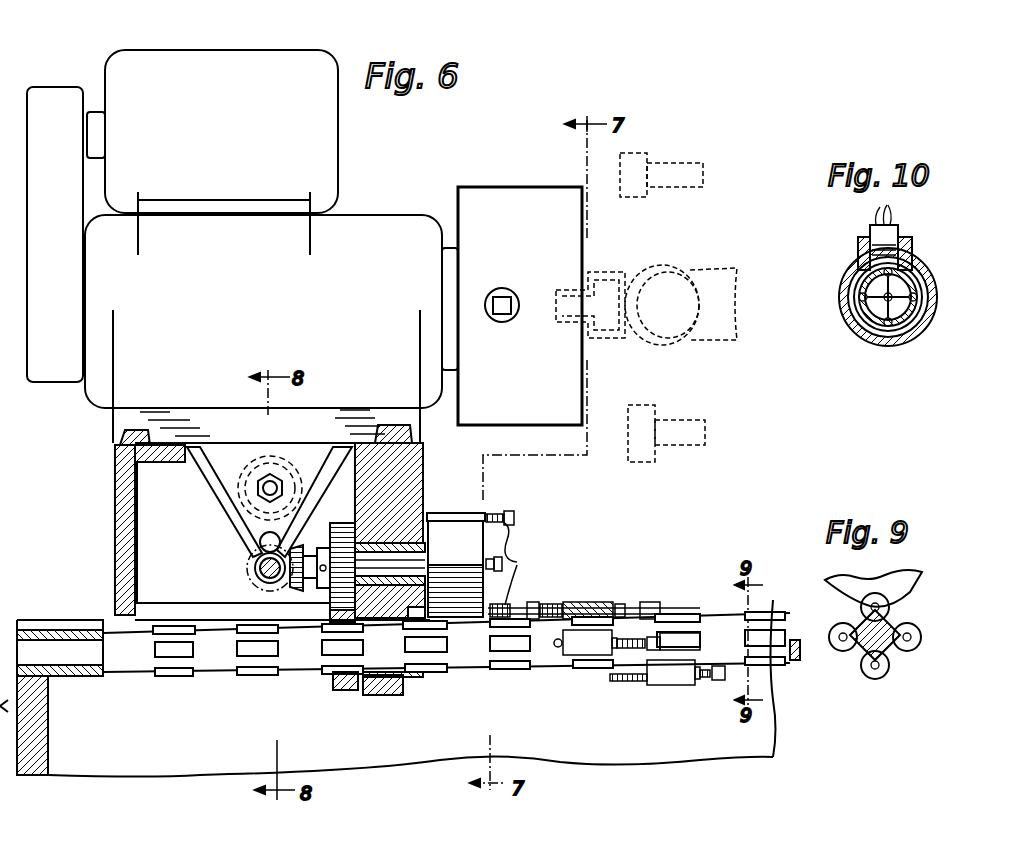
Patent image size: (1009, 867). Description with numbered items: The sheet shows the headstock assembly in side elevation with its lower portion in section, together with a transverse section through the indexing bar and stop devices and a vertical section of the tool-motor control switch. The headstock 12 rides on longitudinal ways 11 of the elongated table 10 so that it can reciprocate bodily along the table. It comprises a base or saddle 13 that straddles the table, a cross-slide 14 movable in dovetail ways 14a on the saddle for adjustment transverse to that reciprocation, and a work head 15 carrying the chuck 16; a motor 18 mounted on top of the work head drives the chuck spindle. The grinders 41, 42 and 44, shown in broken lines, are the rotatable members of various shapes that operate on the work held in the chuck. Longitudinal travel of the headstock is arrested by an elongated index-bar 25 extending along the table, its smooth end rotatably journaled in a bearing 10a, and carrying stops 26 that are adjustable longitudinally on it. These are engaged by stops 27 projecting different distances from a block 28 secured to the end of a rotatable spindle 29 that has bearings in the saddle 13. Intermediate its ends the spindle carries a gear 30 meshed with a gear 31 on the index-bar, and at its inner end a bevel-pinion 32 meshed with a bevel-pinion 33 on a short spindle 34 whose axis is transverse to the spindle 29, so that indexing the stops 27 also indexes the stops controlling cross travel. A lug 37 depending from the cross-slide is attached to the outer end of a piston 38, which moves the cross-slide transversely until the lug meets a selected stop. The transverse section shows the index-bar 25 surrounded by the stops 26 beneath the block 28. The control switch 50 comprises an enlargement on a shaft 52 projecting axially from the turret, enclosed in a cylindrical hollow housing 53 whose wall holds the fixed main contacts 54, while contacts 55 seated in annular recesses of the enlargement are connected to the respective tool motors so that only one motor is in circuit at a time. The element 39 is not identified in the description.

In FIG. 6, the table 10 is at (153, 775).
In FIG. 6, the bearing 10a is at (78, 678).
In FIG. 6, the longitudinal ways 11 is at (96, 620).
In FIG. 6, the headstock 12 is at (92, 427).
In FIG. 6, the base or saddle 13 is at (126, 492).
In FIG. 6, the cross-slide 14 is at (378, 445).
In FIG. 6, the dovetail ways 14a is at (160, 440).
In FIG. 6, the work head 15 is at (378, 215).
In FIG. 6, the chuck 16 is at (488, 190).
In FIG. 6, the motor 18 is at (206, 56).
In FIG. 6, the index-bar 25 is at (545, 673).
In FIG. 9, the index-bar 25 is at (890, 650).
In FIG. 6, the stops 26 is at (590, 632).
In FIG. 9, the stops 26 is at (905, 626).
In FIG. 6, the stops 27 is at (593, 565).
In FIG. 6, the block 28 is at (459, 513).
In FIG. 9, the block 28 is at (926, 583).
In FIG. 6, the spindle 29 is at (420, 558).
In FIG. 6, the gear 30 is at (342, 525).
In FIG. 6, the gear 31 is at (345, 691).
In FIG. 6, the bevel-pinion 32 is at (298, 590).
In FIG. 6, the bevel-pinion 33 is at (248, 575).
In FIG. 6, the short spindle 34 is at (258, 566).
In FIG. 6, the lug 37 is at (255, 527).
In FIG. 6, the piston 38 is at (266, 489).
In FIG. 6, the drive pulley 39 is at (262, 468).
In FIG. 6, the grinder 41 is at (661, 272).
In FIG. 6, the grinder 42 is at (650, 156).
In FIG. 6, the grinder 44 is at (650, 405).
In FIG. 10, the control switch 50 is at (908, 232).
In FIG. 10, the shaft 52 is at (918, 322).
In FIG. 10, the housing 53 is at (897, 344).
In FIG. 10, the fixed main contacts 54 is at (906, 250).
In FIG. 10, the contacts 55 is at (928, 285).